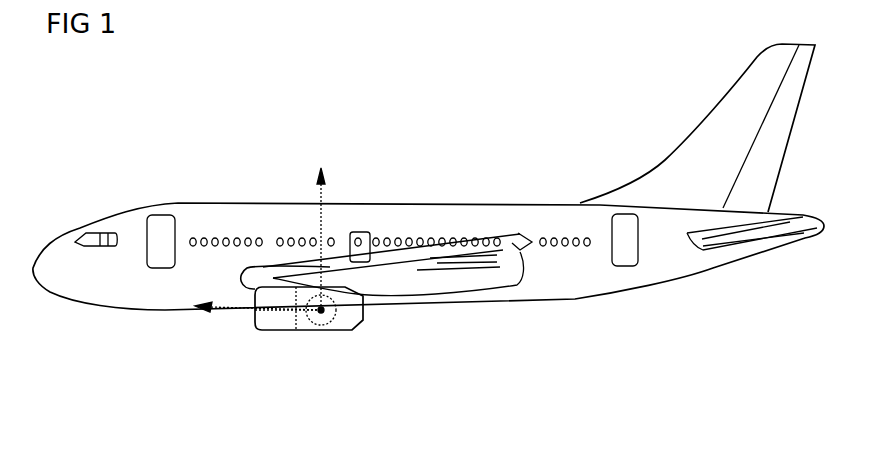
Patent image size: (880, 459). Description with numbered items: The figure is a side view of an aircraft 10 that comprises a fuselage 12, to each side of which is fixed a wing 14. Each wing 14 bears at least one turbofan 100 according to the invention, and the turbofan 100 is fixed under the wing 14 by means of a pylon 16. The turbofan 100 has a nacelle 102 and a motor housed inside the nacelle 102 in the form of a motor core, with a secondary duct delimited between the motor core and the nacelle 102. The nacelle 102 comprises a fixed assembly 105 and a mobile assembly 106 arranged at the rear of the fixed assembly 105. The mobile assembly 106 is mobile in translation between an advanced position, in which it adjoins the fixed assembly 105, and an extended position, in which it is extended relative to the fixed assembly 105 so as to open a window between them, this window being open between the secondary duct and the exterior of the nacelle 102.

The aircraft 10 is at (574, 132).
The fuselage 12 is at (588, 274).
The wing 14 is at (405, 238).
The pylon 16 is at (380, 287).
The turbofan 100 is at (186, 347).
The nacelle 102 is at (244, 372).
The fixed assembly 105 is at (276, 332).
The mobile assembly 106 is at (343, 330).